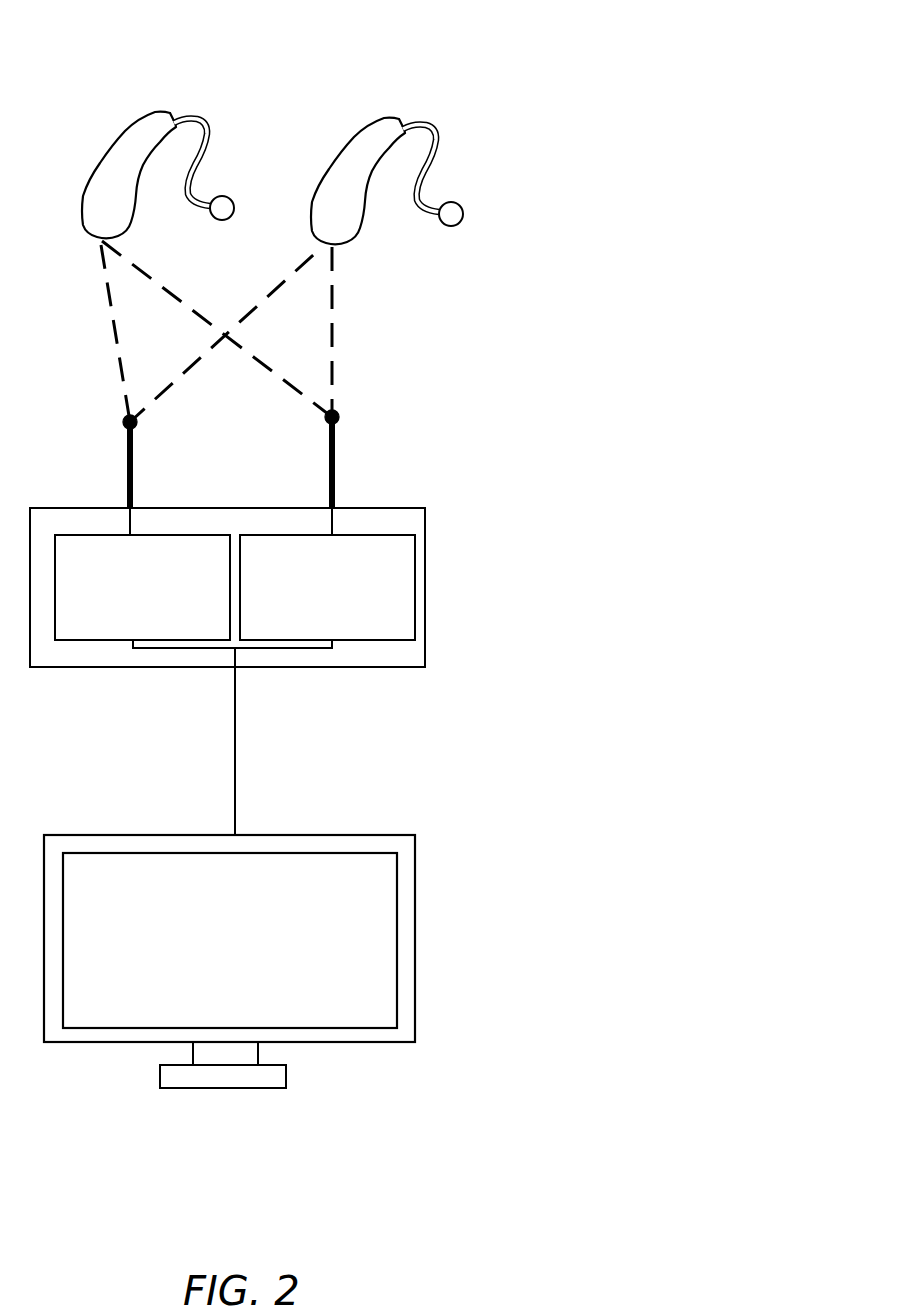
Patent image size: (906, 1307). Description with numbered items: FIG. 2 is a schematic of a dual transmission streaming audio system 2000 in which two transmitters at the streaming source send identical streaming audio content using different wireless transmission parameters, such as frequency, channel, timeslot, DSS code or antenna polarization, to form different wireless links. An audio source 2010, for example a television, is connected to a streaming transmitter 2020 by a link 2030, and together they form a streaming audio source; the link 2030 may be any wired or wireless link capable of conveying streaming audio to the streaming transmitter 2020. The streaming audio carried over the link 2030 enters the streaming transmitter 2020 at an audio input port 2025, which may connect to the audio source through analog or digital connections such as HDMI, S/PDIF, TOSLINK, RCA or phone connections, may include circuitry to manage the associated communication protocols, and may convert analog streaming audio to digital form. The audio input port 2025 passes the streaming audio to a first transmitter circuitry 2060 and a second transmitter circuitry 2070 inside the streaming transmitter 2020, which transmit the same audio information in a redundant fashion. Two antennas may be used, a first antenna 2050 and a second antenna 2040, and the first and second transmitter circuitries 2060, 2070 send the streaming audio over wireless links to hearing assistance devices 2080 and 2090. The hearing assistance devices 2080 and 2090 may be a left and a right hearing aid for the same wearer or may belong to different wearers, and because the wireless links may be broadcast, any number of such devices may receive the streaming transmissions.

The dual transmission streaming audio system 2000 is at (514, 28).
The audio source 2010 is at (305, 835).
The streaming transmitter 2020 is at (426, 542).
The audio input port 2025 is at (236, 676).
The link 2030 is at (236, 740).
The second antenna 2040 is at (336, 463).
The first antenna 2050 is at (127, 457).
The first transmitter circuitry 2060 is at (165, 535).
The second transmitter circuitry 2070 is at (373, 535).
The hearing assistance device 2080 is at (200, 113).
The hearing assistance device 2090 is at (430, 119).